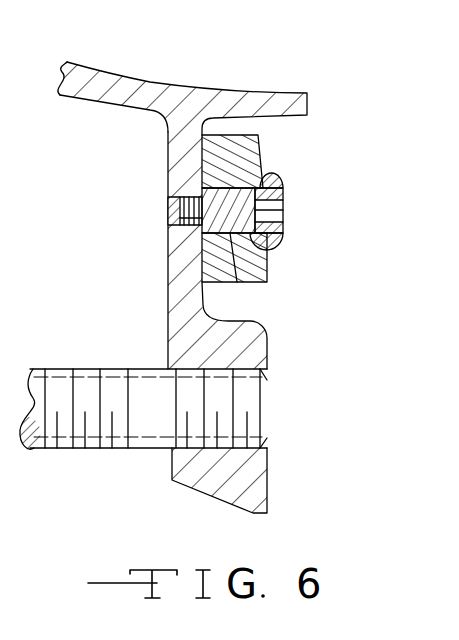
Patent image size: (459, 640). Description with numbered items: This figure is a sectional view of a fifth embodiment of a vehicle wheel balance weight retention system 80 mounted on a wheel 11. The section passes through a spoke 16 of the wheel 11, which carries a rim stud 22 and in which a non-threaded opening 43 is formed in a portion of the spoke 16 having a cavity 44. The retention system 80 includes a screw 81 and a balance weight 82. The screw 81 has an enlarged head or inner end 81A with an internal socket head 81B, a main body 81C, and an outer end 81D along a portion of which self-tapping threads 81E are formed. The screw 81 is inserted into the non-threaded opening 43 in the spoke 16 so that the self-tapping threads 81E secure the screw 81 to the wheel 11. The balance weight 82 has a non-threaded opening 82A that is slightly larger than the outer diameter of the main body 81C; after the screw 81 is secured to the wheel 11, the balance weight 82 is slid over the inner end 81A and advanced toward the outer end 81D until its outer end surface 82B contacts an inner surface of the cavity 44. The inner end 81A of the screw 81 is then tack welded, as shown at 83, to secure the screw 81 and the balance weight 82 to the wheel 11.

The wheel 11 is at (98, 60).
The spoke 16 is at (100, 97).
The rim stud 22 is at (105, 450).
The non-threaded opening 43 is at (166, 206).
The cavity 44 is at (243, 300).
The vehicle wheel balance weight retention system 80 is at (338, 102).
The screw 81 is at (236, 195).
The enlarged head or inner end 81A is at (287, 222).
The internal socket head 81B is at (283, 203).
The main body 81C is at (242, 296).
The outer end 81D is at (185, 197).
The self-tapping threads 81E is at (185, 222).
The balance weight 82 is at (223, 145).
The non-threaded opening 82A is at (270, 250).
The outer end surface 82B is at (205, 268).
The tack weld 83 is at (274, 172).